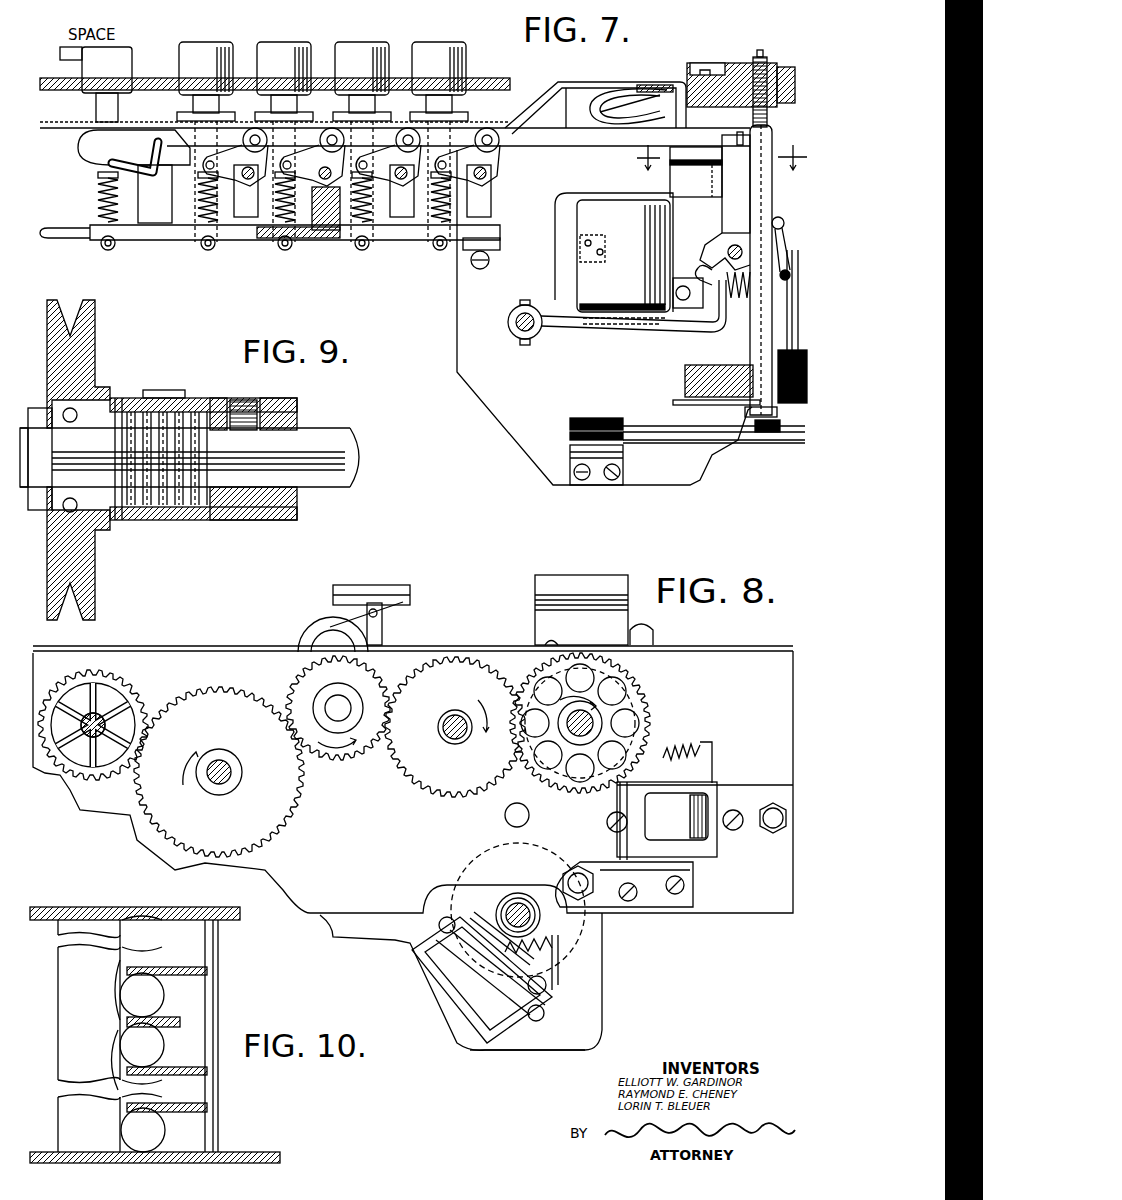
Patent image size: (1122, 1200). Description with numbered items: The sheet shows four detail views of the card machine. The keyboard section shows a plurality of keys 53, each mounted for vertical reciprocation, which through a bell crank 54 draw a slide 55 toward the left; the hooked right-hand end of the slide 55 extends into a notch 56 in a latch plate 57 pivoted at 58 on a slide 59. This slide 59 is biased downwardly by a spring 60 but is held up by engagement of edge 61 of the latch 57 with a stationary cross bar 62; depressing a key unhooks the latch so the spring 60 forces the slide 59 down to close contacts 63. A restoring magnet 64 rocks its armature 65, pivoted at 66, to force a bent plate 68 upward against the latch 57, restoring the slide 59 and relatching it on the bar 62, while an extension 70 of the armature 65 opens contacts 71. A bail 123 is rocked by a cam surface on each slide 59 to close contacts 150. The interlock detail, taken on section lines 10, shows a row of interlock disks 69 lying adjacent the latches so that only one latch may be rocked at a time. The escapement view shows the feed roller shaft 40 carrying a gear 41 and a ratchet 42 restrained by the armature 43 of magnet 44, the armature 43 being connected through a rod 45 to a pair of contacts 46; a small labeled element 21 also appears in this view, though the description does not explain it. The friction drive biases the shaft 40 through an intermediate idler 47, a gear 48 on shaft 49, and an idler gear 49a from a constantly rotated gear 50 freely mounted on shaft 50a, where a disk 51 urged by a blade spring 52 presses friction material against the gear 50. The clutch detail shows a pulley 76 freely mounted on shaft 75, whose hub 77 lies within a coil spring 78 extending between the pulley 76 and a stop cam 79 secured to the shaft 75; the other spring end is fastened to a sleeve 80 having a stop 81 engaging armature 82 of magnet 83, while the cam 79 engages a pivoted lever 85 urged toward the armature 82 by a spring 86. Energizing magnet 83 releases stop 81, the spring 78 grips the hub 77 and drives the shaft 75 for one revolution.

In FIG. 7, the keys 53 is at (428, 50).
In FIG. 7, the bell crank 54 is at (377, 220).
In FIG. 7, the slide 55 is at (508, 135).
In FIG. 7, the notch 56 is at (737, 135).
In FIG. 7, the spring 60 is at (775, 62).
In FIG. 7, the section lines 10— 10 is at (722, 149).
In FIG. 7, the interlock disks 69 is at (712, 168).
In FIG. 10, the interlock disks 69 is at (120, 1000).
In FIG. 7, the edge 61 is at (755, 175).
In FIG. 7, the stationary cross bar 62 is at (752, 193).
In FIG. 7, the latch plate 57 is at (730, 207).
In FIG. 10, the latch plate 57 is at (205, 970).
In FIG. 7, the slide 59 is at (758, 207).
In FIG. 7, the pivot 58 is at (728, 252).
In FIG. 7, the bent plate 68 is at (712, 270).
In FIG. 7, the restoring magnet 64 is at (614, 252).
In FIG. 7, the contacts 71 is at (640, 280).
In FIG. 7, the bail 123 is at (785, 235).
In FIG. 7, the contacts 150 is at (790, 290).
In FIG. 7, the pivot 66 is at (515, 335).
In FIG. 7, the armature 65 is at (615, 335).
In FIG. 7, the extension 70 is at (683, 300).
In FIG. 7, the contacts 63 is at (790, 438).
In FIG. 9, the pulley 76 is at (88, 340).
In FIG. 8, the pulley 76 is at (470, 870).
In FIG. 9, the hub 77 is at (118, 398).
In FIG. 9, the sleeve 80 is at (185, 398).
In FIG. 9, the shaft 75 is at (330, 432).
In FIG. 8, the shaft 75 is at (518, 898).
In FIG. 9, the coil spring 78 is at (180, 520).
In FIG. 9, the stop cam 79 is at (290, 520).
In FIG. 8, the stop cam 79 is at (548, 878).
In FIG. 8, the shaft 50a is at (105, 712).
In FIG. 8, the gear 50 is at (130, 692).
In FIG. 8, the idler gear 49a is at (205, 700).
In FIG. 8, the disk 51 is at (128, 735).
In FIG. 8, the blade spring 52 is at (93, 770).
In FIG. 8, the shaft 49 is at (346, 704).
In FIG. 8, the gear 48 is at (335, 755).
In FIG. 8, the intermediate idler 47 is at (447, 670).
In FIG. 8, the gear 41 is at (610, 690).
In FIG. 8, the shaft 40 is at (600, 722).
In FIG. 8, the ratchet 42 is at (632, 738).
In FIG. 8, the armature 43 is at (690, 790).
In FIG. 8, the hole 21 is at (505, 818).
In FIG. 8, the rod 45 is at (617, 795).
In FIG. 8, the magnet 44 is at (676, 816).
In FIG. 8, the contacts 46 is at (612, 910).
In FIG. 8, the stop 81 is at (500, 925).
In FIG. 8, the magnet 83 is at (440, 980).
In FIG. 8, the spring 86 is at (545, 985).
In FIG. 8, the pivoted lever 85 is at (560, 945).
In FIG. 8, the armature 82 is at (520, 1040).